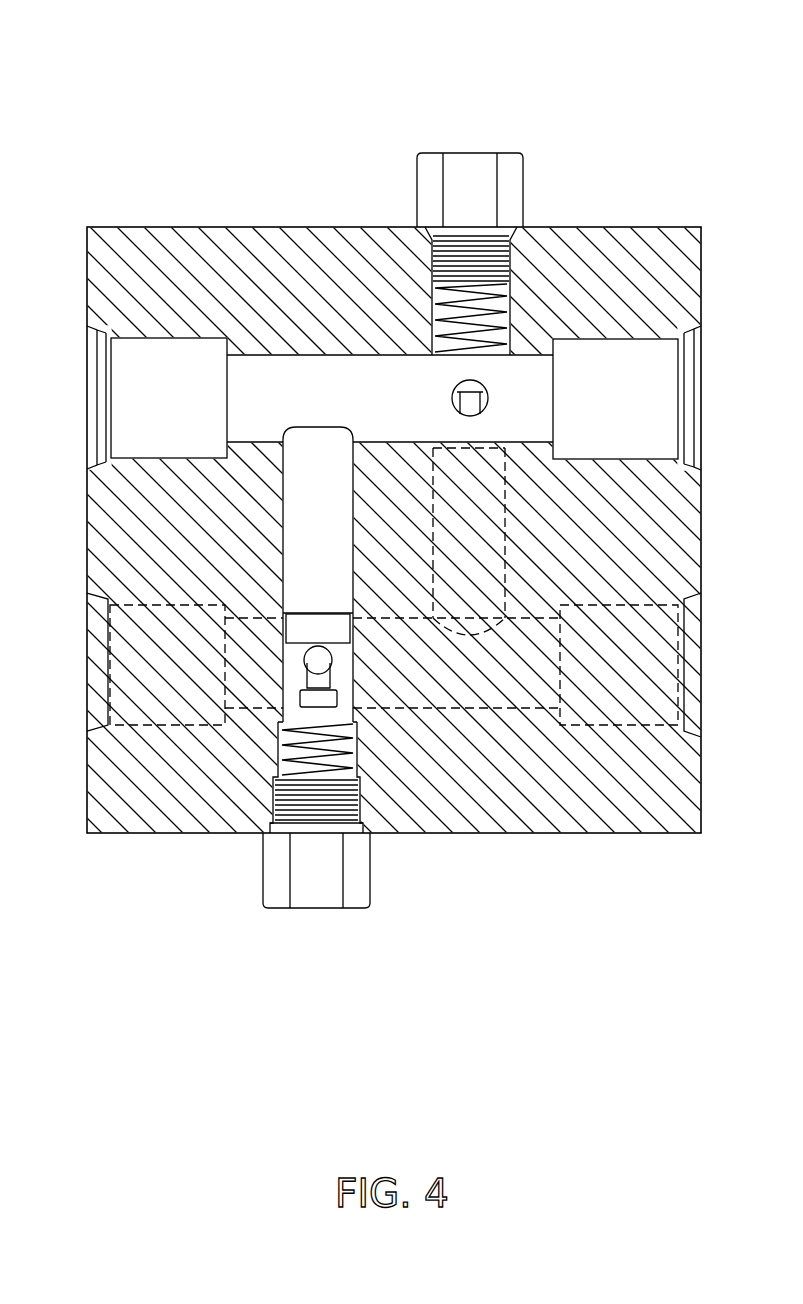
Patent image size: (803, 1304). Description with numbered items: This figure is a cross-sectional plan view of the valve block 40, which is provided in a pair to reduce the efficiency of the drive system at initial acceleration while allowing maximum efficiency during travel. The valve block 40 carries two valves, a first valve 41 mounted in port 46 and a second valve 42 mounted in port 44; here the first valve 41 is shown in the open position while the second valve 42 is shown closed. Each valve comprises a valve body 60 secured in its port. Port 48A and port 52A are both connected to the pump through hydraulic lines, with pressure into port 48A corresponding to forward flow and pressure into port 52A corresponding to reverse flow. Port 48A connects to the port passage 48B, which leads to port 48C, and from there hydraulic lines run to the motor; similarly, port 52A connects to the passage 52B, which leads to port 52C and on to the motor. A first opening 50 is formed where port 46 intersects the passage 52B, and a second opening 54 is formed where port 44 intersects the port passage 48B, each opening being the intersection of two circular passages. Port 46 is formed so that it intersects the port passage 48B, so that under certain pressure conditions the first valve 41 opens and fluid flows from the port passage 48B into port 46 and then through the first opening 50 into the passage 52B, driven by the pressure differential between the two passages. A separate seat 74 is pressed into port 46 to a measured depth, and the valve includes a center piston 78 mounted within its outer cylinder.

The valve block 40 is at (650, 112).
The first valve 41 is at (355, 925).
The second valve 42 is at (432, 138).
The port 44 is at (470, 540).
The port 46 is at (333, 497).
The port 48A is at (702, 400).
The port passage 48B is at (383, 409).
The port 48C is at (86, 397).
The first opening 50 is at (312, 662).
The port 52A is at (702, 666).
The passage 52B is at (430, 660).
The port 52C is at (86, 665).
The second opening 54 is at (488, 398).
The valve body 60 is at (487, 204).
The seat 74 is at (333, 625).
The center piston 78 is at (314, 657).